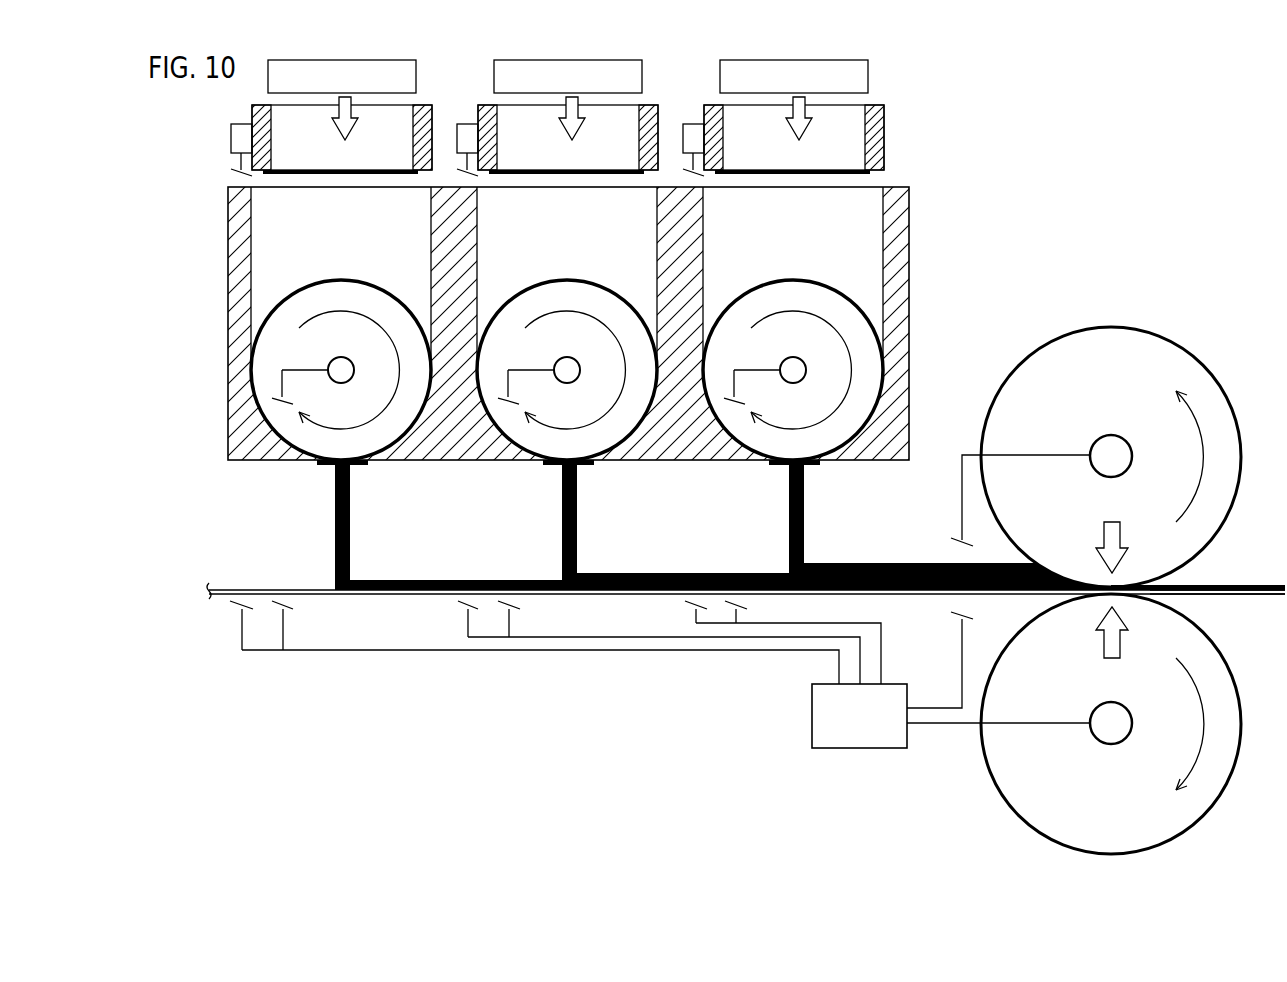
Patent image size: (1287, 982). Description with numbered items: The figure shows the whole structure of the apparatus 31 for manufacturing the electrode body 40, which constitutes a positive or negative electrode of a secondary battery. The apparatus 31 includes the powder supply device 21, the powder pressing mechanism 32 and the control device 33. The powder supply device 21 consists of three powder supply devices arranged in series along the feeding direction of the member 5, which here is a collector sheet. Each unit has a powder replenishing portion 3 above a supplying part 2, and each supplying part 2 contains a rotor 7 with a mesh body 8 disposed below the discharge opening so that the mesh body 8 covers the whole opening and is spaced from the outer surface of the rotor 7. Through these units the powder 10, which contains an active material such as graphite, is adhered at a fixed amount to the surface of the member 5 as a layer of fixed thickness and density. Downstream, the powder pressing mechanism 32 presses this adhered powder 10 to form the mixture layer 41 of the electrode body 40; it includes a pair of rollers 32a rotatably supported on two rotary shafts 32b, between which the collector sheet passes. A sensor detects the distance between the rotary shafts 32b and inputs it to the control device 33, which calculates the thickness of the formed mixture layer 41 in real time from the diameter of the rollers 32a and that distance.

The supplying part 2 is at (207, 265).
The powder replenishing portion 3 is at (228, 137).
The member to which the powder is to be supplied 5 is at (268, 588).
The rotor 7 is at (344, 277).
The mesh body 8 is at (317, 463).
The powder 10 is at (416, 77).
The powder supply device 21 is at (933, 193).
The apparatus 31 is at (1195, 140).
The powder pressing mechanism 32 is at (1106, 250).
The rollers 32a is at (1013, 370).
The rotary shafts 32b is at (1111, 435).
The control device 33 is at (812, 716).
The electrode body 40 is at (1246, 608).
The mixture layer 41 is at (1245, 583).